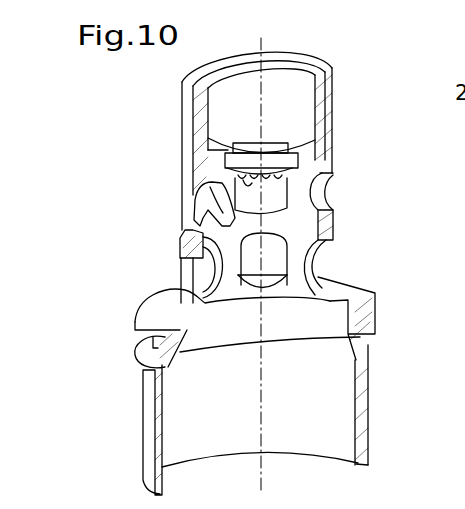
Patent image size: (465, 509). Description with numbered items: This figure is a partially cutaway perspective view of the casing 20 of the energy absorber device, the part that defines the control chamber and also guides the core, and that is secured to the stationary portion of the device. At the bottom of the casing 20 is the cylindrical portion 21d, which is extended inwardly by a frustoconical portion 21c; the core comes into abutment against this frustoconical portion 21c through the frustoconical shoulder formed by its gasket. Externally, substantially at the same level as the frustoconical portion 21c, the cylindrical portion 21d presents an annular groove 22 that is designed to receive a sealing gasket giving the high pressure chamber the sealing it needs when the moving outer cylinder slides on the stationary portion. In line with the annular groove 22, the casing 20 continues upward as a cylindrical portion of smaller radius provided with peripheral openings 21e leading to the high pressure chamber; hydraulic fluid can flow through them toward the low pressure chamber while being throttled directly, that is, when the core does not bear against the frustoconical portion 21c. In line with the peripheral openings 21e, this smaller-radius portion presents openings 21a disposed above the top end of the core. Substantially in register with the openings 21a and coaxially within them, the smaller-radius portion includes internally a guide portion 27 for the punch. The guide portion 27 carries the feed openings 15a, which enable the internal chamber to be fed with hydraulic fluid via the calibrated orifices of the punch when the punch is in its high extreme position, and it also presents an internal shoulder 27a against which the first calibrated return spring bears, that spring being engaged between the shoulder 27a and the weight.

The casing 20 is at (160, 173).
The feed openings 15a is at (249, 150).
The internal shoulder 27a is at (297, 140).
The openings 21a is at (330, 185).
The guide portion 27 is at (230, 231).
The peripheral openings 21e is at (287, 257).
The annular groove 22 is at (362, 315).
The frustoconical portion 21c is at (170, 358).
The cylindrical portion 21d is at (367, 447).